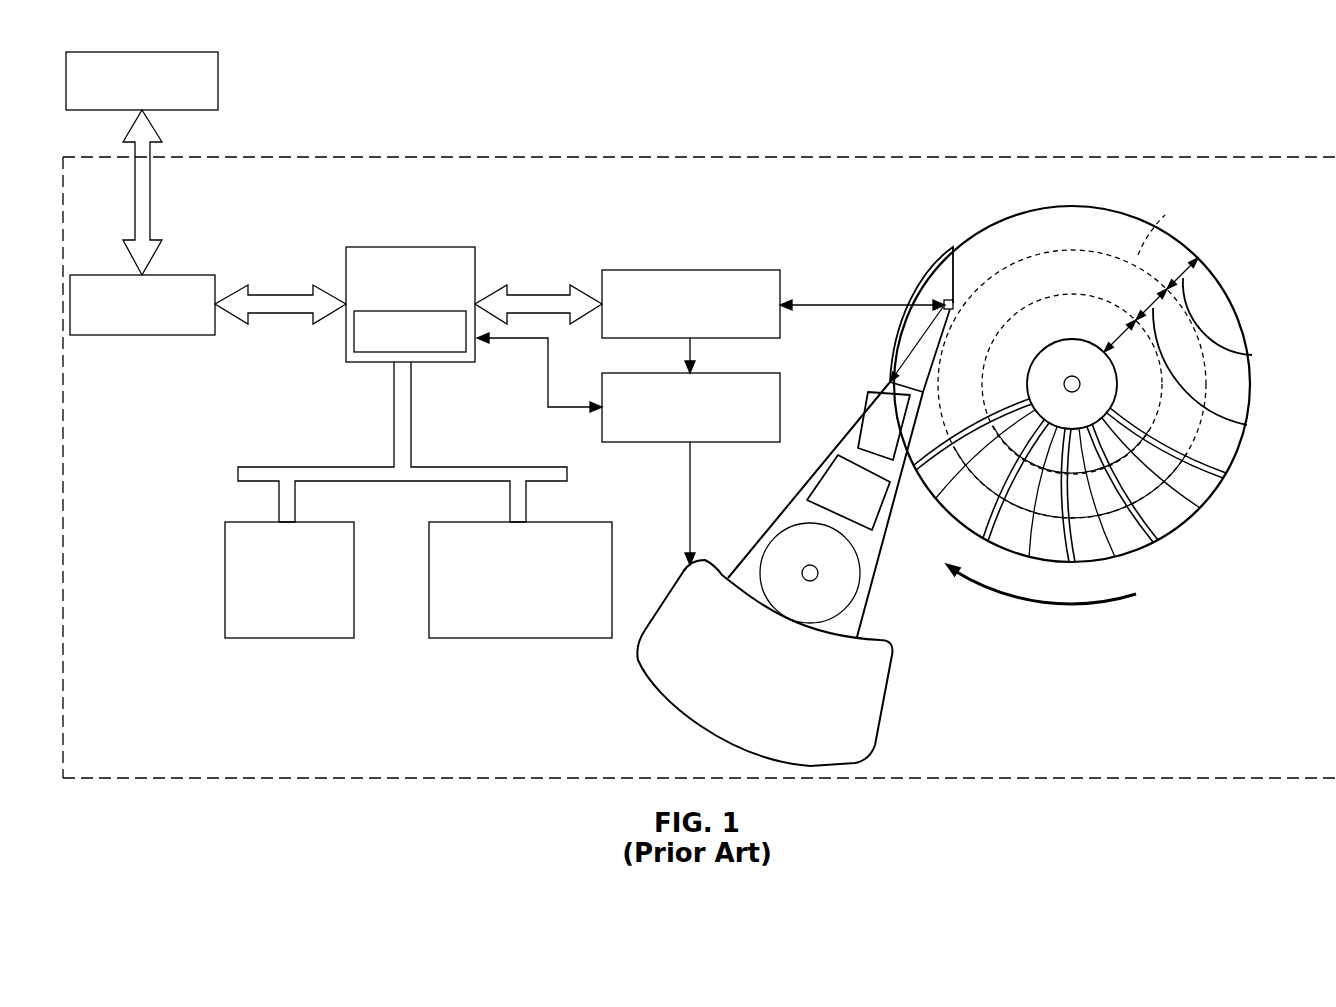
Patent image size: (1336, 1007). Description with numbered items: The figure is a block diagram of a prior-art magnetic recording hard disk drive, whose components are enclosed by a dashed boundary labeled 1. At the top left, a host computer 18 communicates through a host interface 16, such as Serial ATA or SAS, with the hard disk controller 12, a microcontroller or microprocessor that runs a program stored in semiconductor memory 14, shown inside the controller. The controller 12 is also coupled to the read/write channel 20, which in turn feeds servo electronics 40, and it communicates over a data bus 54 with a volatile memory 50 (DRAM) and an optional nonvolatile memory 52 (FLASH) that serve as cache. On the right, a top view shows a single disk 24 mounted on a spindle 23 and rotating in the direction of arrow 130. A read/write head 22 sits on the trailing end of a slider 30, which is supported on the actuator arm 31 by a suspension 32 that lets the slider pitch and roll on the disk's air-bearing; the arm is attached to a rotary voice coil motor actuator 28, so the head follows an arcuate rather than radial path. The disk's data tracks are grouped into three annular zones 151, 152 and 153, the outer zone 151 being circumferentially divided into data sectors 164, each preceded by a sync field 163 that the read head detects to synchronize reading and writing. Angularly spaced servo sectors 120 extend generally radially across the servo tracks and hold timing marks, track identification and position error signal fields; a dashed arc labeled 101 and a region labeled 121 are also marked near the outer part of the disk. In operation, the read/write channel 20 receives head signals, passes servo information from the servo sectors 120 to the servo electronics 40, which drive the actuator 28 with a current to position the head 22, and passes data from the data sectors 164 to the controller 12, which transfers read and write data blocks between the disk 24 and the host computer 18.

The disk drive 1 is at (1300, 157).
The hard disk controller 12 is at (370, 247).
The semiconductor memory 14 is at (372, 355).
The host interface 16 is at (116, 275).
The host computer 18 is at (108, 50).
The read/write channel 20 is at (656, 270).
The read/write head 22 is at (948, 252).
The spindle 23 is at (1070, 377).
The disk 24 is at (1026, 208).
The rotary voice coil motor actuator 28 is at (690, 583).
The slider 30 is at (942, 298).
The actuator arm 31 is at (864, 406).
The suspension 32 is at (912, 356).
The servo electronics 40 is at (656, 373).
The volatile memory 50 is at (224, 530).
The nonvolatile memory 52 is at (612, 530).
The data bus 54 is at (290, 467).
The head path arc 101 is at (1166, 216).
The servo sectors 120 is at (1157, 537).
The data track 121 is at (1233, 478).
The arrow 130 is at (1083, 612).
The radially outer data zone 151 is at (1250, 355).
The data zone 152 is at (1247, 425).
The data zone 153 is at (1120, 338).
The sync fields 163 is at (1175, 505).
The data sectors 164 is at (1202, 497).